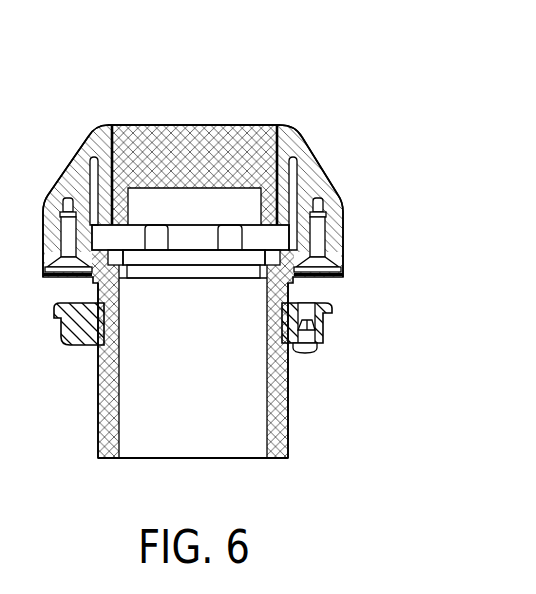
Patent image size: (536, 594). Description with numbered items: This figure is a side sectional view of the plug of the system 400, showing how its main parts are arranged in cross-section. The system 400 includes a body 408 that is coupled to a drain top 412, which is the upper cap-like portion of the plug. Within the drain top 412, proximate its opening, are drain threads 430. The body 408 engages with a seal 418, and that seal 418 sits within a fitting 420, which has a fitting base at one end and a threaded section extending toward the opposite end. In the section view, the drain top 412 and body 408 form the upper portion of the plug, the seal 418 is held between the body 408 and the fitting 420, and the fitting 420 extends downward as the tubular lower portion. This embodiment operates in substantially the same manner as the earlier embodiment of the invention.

The system 400 is at (413, 102).
The body 408 is at (237, 124).
The drain top 412 is at (344, 160).
The seal 418 is at (212, 262).
The fitting 420 is at (304, 421).
The drain threads 430 is at (278, 126).